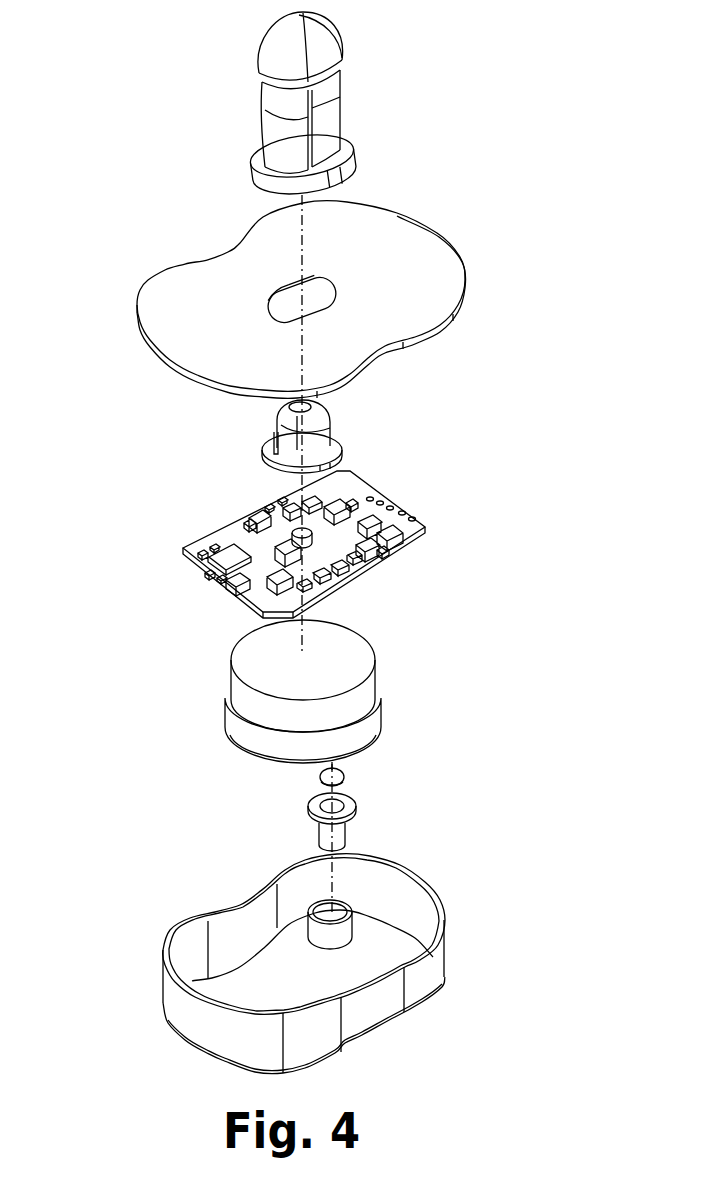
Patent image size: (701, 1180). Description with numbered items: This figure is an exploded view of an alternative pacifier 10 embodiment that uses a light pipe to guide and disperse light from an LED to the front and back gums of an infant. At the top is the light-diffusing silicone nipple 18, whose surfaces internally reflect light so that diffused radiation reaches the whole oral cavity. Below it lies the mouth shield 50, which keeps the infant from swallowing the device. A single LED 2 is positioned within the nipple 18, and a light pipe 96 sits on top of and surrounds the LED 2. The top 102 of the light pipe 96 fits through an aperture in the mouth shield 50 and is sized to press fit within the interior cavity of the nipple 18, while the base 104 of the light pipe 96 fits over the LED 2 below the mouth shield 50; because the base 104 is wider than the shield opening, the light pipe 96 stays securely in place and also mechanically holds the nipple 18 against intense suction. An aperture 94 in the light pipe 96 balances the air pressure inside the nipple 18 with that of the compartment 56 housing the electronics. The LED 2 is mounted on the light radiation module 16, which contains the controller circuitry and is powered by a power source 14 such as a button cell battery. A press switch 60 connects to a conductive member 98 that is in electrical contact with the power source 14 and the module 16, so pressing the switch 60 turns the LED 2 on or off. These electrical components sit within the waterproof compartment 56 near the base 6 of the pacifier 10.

The pacifier 10 is at (122, 101).
The nipple 18 is at (350, 83).
The mouth shield 50 is at (343, 283).
The top of the light pipe 102 is at (290, 306).
The base of the light pipe 104 is at (337, 417).
The light pipe 96 is at (283, 438).
The aperture 94 is at (266, 458).
The LED 2 is at (350, 527).
The light radiation module 16 is at (425, 527).
The power source 14 is at (383, 660).
The conductive member 98 is at (344, 777).
The press switch 60 is at (346, 831).
The waterproof compartment 56 is at (272, 975).
The base 6 is at (271, 960).